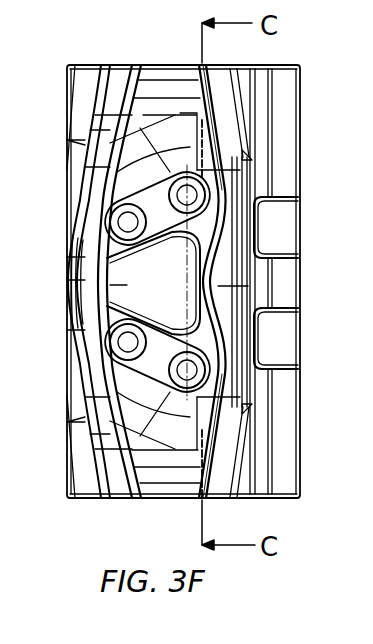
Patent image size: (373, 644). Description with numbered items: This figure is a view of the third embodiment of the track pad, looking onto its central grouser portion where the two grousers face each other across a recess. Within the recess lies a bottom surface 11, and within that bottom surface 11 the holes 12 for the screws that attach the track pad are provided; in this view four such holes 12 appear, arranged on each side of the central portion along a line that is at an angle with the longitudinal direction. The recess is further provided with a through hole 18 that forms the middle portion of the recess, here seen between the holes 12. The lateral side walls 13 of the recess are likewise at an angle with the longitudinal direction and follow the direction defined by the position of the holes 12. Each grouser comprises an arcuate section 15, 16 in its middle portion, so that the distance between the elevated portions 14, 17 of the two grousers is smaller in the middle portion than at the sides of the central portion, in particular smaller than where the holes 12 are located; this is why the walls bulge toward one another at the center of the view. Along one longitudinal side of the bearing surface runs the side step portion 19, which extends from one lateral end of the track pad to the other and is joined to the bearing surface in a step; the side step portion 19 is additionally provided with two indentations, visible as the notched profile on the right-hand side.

The bottom surface 11 is at (172, 236).
The holes 12 is at (125, 220).
The lateral side walls 13 is at (133, 413).
The elevated portion 14 is at (70, 262).
The arcuate section 15 is at (97, 278).
The arcuate section 16 is at (253, 305).
The elevated portion 17 is at (250, 272).
The through hole 18 is at (72, 308).
The side step portion 19 is at (268, 131).